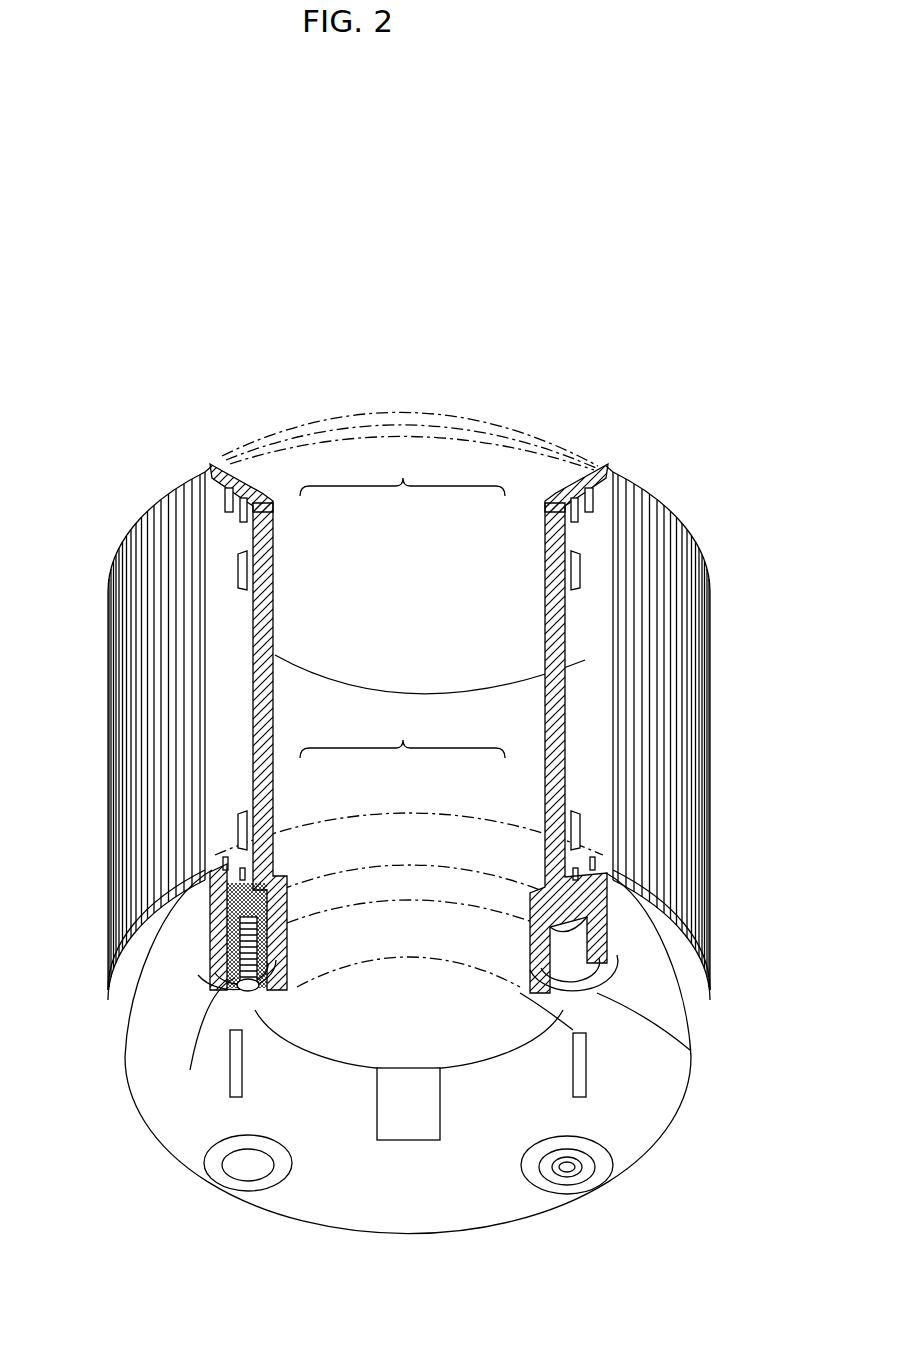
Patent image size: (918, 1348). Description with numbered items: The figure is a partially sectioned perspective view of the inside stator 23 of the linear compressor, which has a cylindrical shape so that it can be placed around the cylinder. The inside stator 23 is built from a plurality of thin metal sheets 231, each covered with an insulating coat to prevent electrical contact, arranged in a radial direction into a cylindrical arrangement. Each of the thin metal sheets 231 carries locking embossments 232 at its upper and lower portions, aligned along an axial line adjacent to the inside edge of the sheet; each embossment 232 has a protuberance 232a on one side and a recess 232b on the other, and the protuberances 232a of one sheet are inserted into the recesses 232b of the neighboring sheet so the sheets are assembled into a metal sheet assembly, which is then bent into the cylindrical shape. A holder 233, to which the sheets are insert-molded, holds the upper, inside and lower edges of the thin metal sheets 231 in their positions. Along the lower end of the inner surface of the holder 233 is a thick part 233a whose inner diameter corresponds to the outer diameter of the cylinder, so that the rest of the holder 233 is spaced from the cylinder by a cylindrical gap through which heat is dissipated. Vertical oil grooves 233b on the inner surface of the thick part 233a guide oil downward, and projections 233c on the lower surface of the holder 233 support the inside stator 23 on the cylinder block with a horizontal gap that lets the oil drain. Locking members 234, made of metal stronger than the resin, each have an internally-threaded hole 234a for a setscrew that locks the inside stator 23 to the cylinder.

The inside stator 23 is at (420, 377).
The thin metal sheets 231 is at (553, 672).
The locking embossments 232 is at (402, 601).
The protuberance 232a is at (571, 572).
The recess 232b is at (247, 570).
The holder 233 is at (553, 632).
The thick part 233a is at (285, 937).
The oil grooves 233b is at (407, 1133).
The projections 233c is at (215, 1172).
The locking members 234 is at (237, 975).
The internally-threaded hole 234a is at (235, 990).